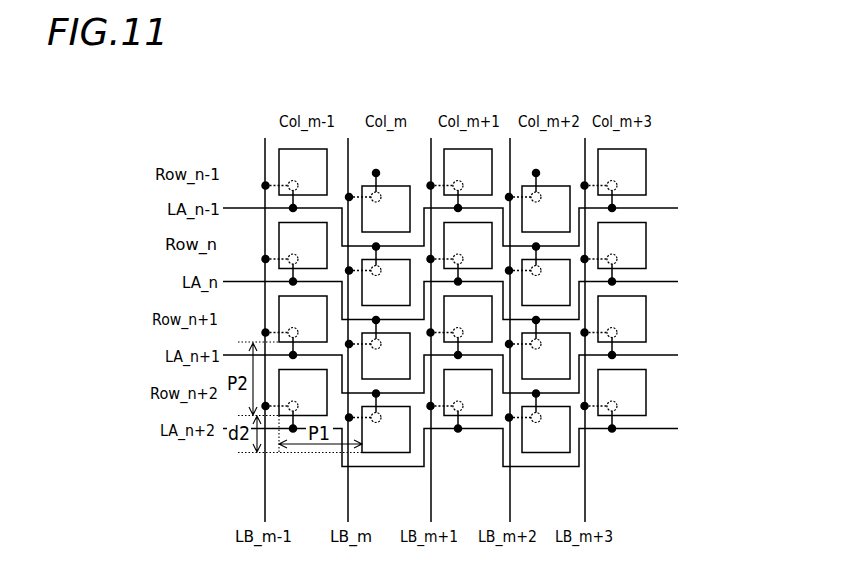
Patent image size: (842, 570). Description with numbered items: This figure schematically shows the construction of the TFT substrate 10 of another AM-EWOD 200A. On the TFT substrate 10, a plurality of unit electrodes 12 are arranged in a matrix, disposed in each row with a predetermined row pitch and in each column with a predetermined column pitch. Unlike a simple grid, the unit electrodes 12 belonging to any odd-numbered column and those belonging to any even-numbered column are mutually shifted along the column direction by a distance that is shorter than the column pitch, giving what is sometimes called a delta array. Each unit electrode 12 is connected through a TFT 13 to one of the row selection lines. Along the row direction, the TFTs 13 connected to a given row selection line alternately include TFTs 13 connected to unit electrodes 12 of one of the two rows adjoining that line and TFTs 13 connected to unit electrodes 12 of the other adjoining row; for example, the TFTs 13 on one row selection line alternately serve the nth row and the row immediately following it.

The AM-EWOD 200A is at (735, 121).
The TFT substrate 10 is at (674, 144).
The unit electrode 12 is at (633, 242).
The TFT 13 is at (618, 258).